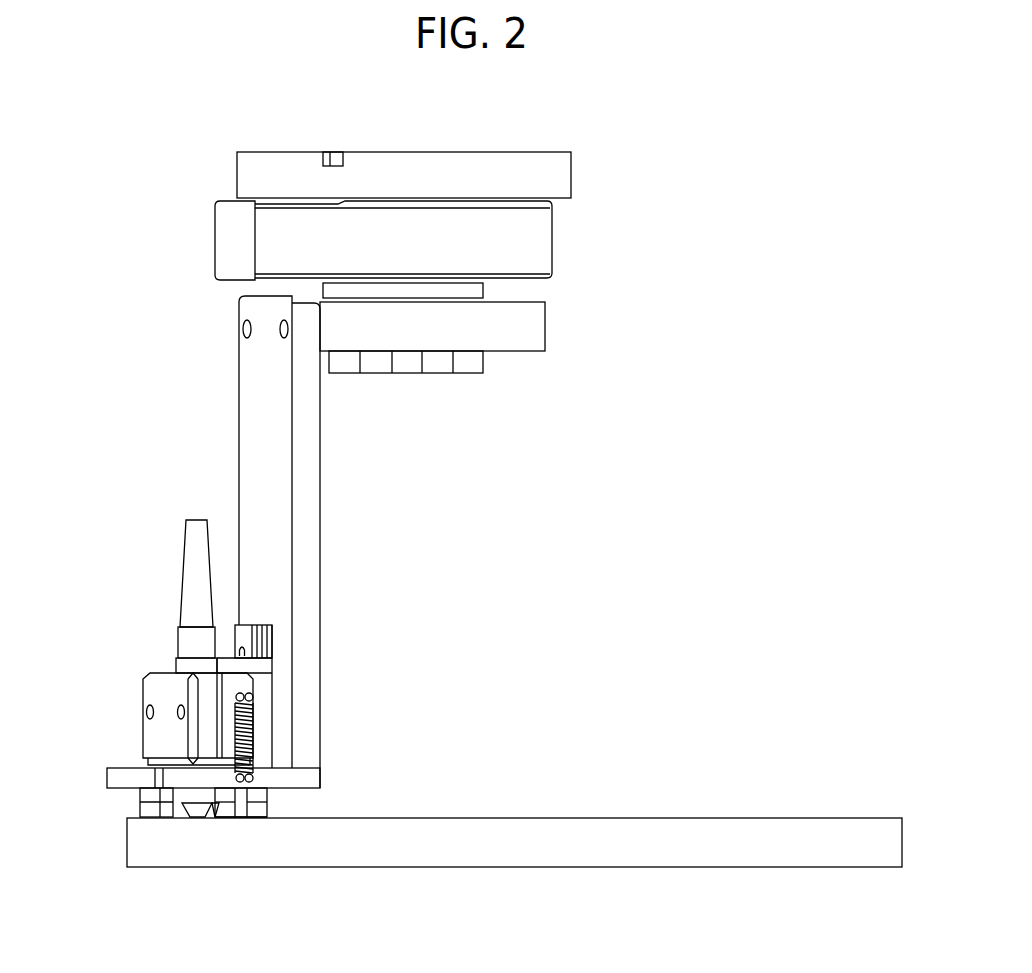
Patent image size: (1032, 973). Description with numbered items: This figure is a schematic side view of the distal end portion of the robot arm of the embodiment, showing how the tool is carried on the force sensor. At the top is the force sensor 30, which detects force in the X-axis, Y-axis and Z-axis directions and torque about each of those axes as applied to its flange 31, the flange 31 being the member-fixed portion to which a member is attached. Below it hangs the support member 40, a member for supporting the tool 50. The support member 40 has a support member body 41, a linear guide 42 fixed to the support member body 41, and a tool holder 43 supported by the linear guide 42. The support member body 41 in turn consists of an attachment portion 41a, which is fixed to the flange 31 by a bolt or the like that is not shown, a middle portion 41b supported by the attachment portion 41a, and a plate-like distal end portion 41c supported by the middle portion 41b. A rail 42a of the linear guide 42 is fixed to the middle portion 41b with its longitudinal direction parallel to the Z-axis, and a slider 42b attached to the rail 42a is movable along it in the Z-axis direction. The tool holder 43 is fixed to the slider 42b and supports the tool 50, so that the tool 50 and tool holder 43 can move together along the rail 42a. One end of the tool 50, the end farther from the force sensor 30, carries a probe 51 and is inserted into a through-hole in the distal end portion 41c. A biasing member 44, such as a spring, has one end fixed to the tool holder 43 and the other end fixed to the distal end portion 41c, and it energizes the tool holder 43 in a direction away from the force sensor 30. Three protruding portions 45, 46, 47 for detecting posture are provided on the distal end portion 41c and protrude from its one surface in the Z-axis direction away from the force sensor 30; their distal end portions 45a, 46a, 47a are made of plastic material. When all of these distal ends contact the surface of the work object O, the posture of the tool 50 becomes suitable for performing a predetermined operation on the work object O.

The force sensor 30 is at (552, 238).
The flange 31 is at (484, 290).
The support member 40 is at (226, 432).
The support member body 41 is at (334, 573).
The attachment portion 41a is at (545, 325).
The middle portion 41b is at (320, 480).
The distal end portion 41c is at (322, 775).
The linear guide 42 is at (264, 666).
The rail 42a is at (243, 633).
The slider 42b is at (272, 678).
The tool holder 43 is at (143, 698).
The biasing member 44 is at (270, 726).
The protruding portion 45 is at (290, 845).
The distal end portion of protruding portion 45a is at (268, 815).
The protruding portion 46 is at (242, 805).
The distal end portion of protruding portion 46a is at (213, 818).
The protruding portion 47 is at (108, 817).
The distal end portion of protruding portion 47a is at (140, 795).
The tool 50 is at (177, 641).
The probe 51 is at (185, 818).
The work object O is at (573, 818).